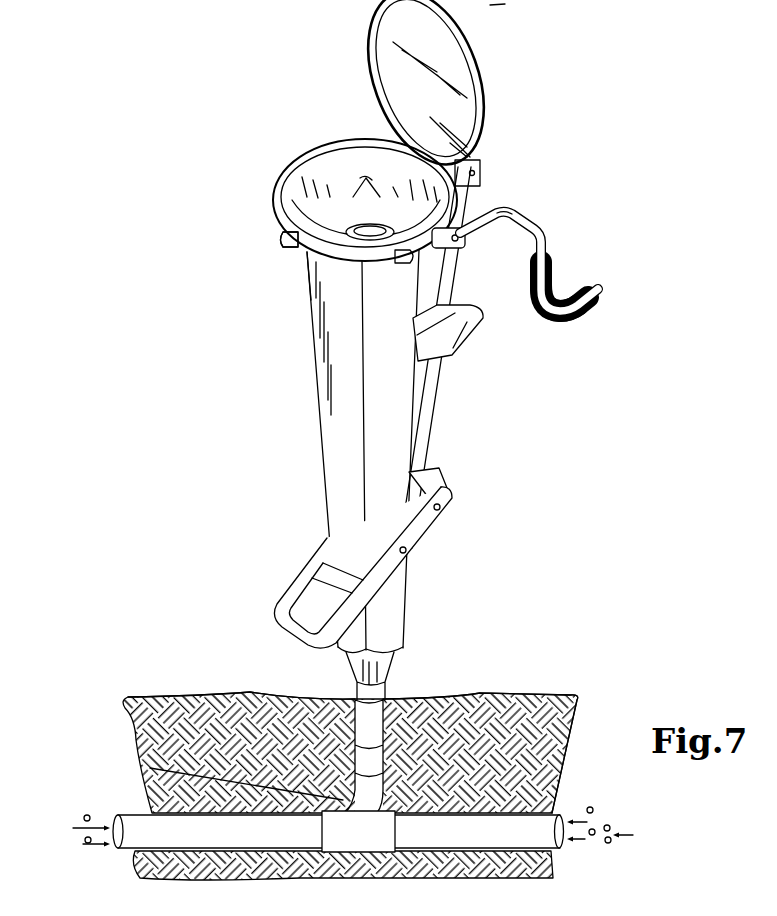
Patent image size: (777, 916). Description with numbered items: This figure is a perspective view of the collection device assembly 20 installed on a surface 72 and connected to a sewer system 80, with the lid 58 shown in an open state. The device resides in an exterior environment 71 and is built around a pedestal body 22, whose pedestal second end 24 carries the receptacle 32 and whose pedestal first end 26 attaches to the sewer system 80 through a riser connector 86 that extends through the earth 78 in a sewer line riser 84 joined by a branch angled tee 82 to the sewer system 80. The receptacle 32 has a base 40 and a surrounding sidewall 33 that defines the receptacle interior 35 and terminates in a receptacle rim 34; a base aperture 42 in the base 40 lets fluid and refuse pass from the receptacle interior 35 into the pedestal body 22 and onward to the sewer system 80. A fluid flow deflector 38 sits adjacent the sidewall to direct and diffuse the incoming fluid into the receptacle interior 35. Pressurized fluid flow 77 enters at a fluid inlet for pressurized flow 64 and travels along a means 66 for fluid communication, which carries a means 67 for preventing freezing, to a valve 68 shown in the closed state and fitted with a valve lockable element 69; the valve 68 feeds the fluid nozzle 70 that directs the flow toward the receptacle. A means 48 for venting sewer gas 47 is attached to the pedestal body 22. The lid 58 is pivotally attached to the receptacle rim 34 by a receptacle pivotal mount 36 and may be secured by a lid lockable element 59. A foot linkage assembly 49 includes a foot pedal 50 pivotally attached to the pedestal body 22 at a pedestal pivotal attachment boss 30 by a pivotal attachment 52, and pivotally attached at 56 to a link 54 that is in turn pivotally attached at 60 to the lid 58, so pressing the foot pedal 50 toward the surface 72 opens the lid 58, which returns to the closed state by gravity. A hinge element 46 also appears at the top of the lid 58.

The collection device assembly 20 is at (257, 52).
The pedestal body 22 is at (333, 423).
The pedestal second end 24 is at (308, 262).
The pedestal first end 26 is at (357, 697).
The pedestal pivotal attachment boss 30 is at (422, 478).
The receptacle 32 is at (268, 167).
The sidewall 33 is at (287, 181).
The receptacle rim 34 is at (297, 160).
The receptacle interior 35 is at (406, 179).
The receptacle pivotal mount 36 is at (448, 137).
The fluid flow deflector 38 is at (397, 258).
The base 40 is at (352, 207).
The base aperture 42 is at (373, 225).
The hinge 46 is at (512, 9).
The sewer gas 47 is at (87, 816).
The means for venting sewer gas 48 is at (455, 348).
The foot linkage assembly 49 is at (283, 648).
The foot pedal 50 is at (278, 607).
The foot pedal pivotal attachment to pedestal 52 is at (443, 512).
The link 54 is at (432, 407).
The foot pedal pivotal attachment to link 56 is at (410, 550).
The lid 58 is at (470, 58).
The lid lockable element 59 is at (290, 241).
The link pivotal attachment to lid 60 is at (476, 172).
The fluid inlet for pressurized flow 64 is at (600, 286).
The means for fluid communication 66 is at (548, 247).
The means for preventing freezing of the pressurized fluid flow 67 is at (538, 306).
The valve 68 is at (458, 241).
The valve lockable element 69 is at (473, 212).
The fluid nozzle 70 is at (431, 248).
The exterior environment 71 is at (519, 352).
The surface 72 is at (525, 690).
The pressurized fluid flow 77 is at (613, 279).
The earth 78 is at (353, 722).
The sewer system 80 is at (133, 853).
The branch angled tee 82 is at (150, 768).
The sewer line riser 84 is at (200, 698).
The riser connector 86 is at (397, 697).